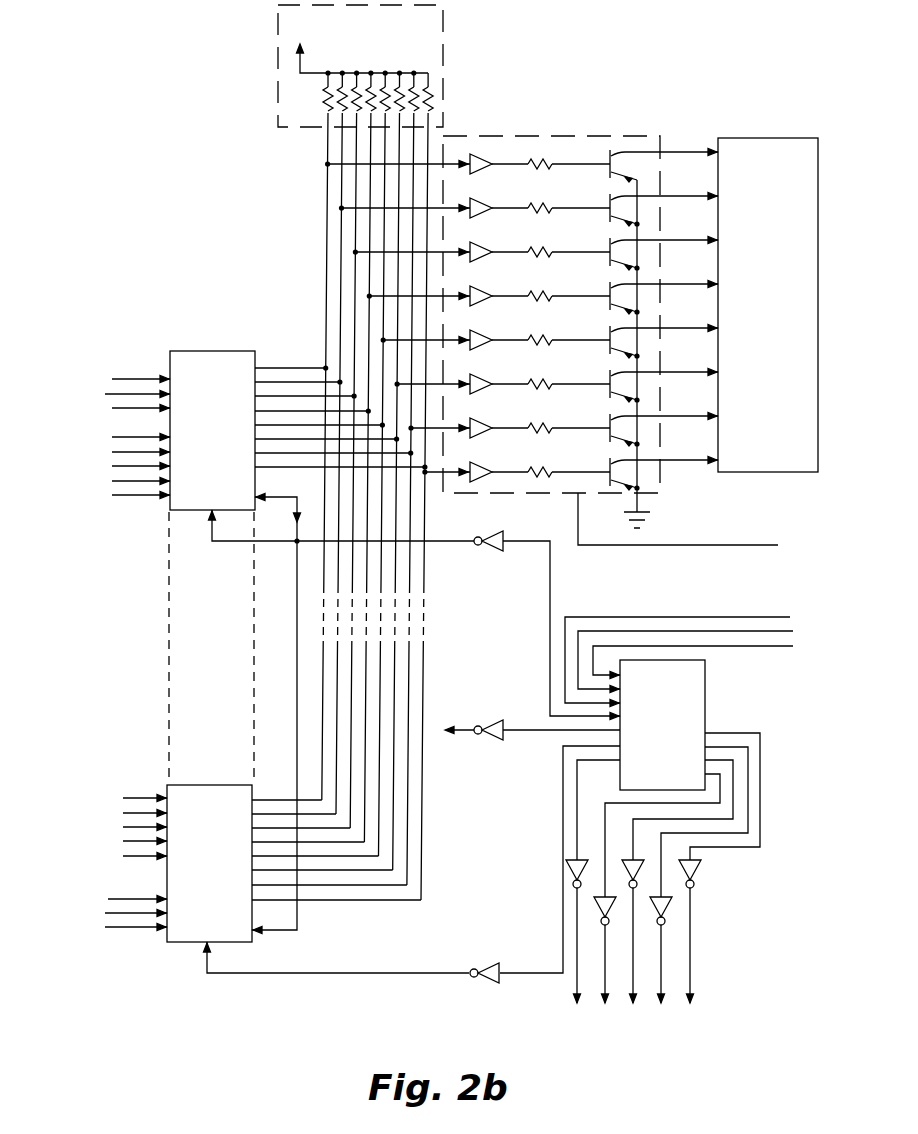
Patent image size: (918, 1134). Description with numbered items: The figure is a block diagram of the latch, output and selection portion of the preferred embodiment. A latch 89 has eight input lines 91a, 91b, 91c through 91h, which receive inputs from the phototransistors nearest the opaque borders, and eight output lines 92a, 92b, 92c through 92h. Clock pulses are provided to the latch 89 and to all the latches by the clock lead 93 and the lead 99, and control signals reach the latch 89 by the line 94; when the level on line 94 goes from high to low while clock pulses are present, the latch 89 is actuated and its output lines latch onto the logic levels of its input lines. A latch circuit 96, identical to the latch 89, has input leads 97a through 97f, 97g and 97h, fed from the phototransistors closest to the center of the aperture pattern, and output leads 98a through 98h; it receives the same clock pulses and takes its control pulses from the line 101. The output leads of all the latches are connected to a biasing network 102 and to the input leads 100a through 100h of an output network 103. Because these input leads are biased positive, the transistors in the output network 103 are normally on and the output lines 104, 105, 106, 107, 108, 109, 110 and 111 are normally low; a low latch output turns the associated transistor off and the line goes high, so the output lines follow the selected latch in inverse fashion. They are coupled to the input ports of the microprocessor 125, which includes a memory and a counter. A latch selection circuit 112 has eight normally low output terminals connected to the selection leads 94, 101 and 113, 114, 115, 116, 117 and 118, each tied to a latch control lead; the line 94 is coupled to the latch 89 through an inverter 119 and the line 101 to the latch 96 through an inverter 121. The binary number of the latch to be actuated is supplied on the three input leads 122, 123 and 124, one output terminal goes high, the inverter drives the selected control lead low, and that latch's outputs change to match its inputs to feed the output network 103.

The latch 89 is at (205, 350).
The input line 91a is at (138, 378).
The input line 91b is at (124, 393).
The input line 91c is at (132, 410).
The input line 91h is at (146, 497).
The output line 92a is at (322, 366).
The output line 92b is at (298, 380).
The output line 92c is at (270, 394).
The output line 92h is at (318, 470).
The clock lead 93 is at (574, 498).
The control line 94 is at (210, 529).
The latch circuit 96 is at (196, 784).
The input lead 97a is at (132, 797).
The input lead 97f is at (130, 897).
The input lead 97g is at (112, 914).
The input lead 97h is at (140, 929).
The output lead 98a is at (280, 799).
The output lead 98h is at (388, 903).
The clock lead 99 is at (296, 502).
The input lead 100a is at (450, 150).
The input lead 100h is at (470, 490).
The control line 101 is at (560, 806).
The biasing network 102 is at (332, 66).
The output network 103 is at (598, 134).
The output line 104 is at (690, 150).
The output line 105 is at (690, 194).
The output line 106 is at (690, 238).
The output line 107 is at (690, 282).
The output line 108 is at (690, 326).
The output line 109 is at (690, 370).
The output line 110 is at (690, 414).
The output line 111 is at (690, 458).
The latch selection circuit 112 is at (705, 665).
The selection lead 113 is at (532, 733).
The selection lead 114 is at (574, 988).
The selection lead 115 is at (602, 988).
The selection lead 116 is at (630, 978).
The selection lead 117 is at (662, 972).
The selection lead 118 is at (692, 952).
The inverter 119 is at (496, 552).
The inverter 121 is at (488, 965).
The input lead 122 is at (770, 617).
The input lead 123 is at (780, 633).
The input lead 124 is at (782, 650).
The microprocessor 125 is at (750, 137).